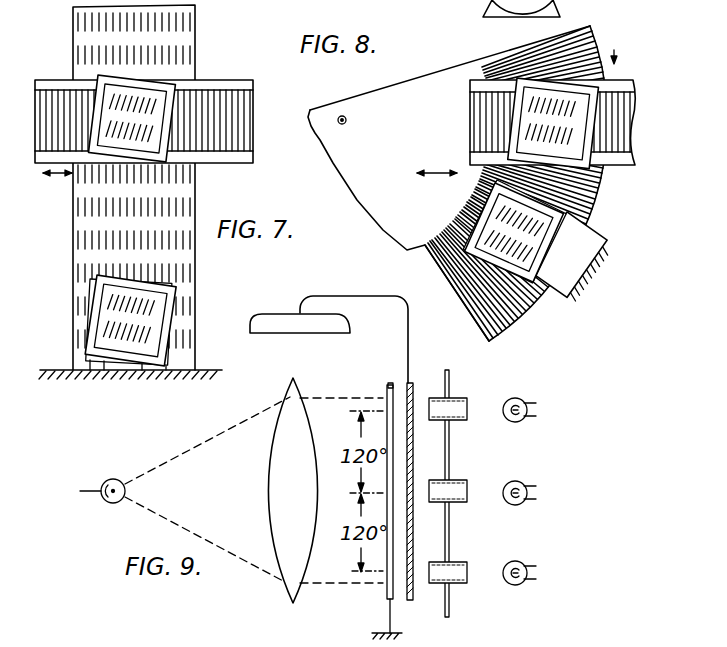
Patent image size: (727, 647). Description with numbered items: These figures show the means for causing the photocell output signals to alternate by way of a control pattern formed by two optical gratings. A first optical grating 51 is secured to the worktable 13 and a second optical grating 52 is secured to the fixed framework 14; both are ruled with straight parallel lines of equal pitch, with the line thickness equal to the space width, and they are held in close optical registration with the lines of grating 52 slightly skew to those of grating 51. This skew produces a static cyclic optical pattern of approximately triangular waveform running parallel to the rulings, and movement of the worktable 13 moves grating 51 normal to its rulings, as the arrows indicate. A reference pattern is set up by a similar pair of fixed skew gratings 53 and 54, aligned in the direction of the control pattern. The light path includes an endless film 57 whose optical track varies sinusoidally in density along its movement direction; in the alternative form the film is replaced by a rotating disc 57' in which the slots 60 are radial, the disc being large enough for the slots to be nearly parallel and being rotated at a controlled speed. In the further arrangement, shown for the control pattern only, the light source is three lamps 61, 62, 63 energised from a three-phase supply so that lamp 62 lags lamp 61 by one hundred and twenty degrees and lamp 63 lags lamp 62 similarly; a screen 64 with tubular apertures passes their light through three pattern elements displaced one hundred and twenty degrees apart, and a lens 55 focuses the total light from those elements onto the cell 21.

In FIG. 9, the worktable 13 is at (273, 318).
In FIG. 7, the fixed framework 14 is at (203, 371).
In FIG. 8, the fixed framework 14 is at (557, 283).
In FIG. 9, the fixed framework 14 is at (380, 632).
In FIG. 9, the cell 21 is at (111, 503).
In FIG. 7, the first optical grating 51 is at (58, 80).
In FIG. 8, the first optical grating 51 is at (483, 82).
In FIG. 9, the first optical grating 51 is at (411, 383).
In FIG. 7, the second optical grating 52 is at (175, 85).
In FIG. 8, the second optical grating 52 is at (580, 168).
In FIG. 9, the second optical grating 52 is at (390, 383).
In FIG. 7, the skew grating 53 is at (172, 296).
In FIG. 8, the skew grating 53 is at (488, 213).
In FIG. 7, the skew grating 54 is at (172, 285).
In FIG. 8, the skew grating 54 is at (567, 216).
In FIG. 9, the lens 55 is at (272, 455).
In FIG. 7, the film 57 is at (153, 187).
In FIG. 8, the rotating disc 57' is at (474, 173).
In FIG. 8, the slots 60 is at (597, 45).
In FIG. 9, the lamp 61 is at (523, 403).
In FIG. 9, the lamp 62 is at (524, 487).
In FIG. 9, the lamp 63 is at (523, 564).
In FIG. 9, the screen 64 is at (450, 553).